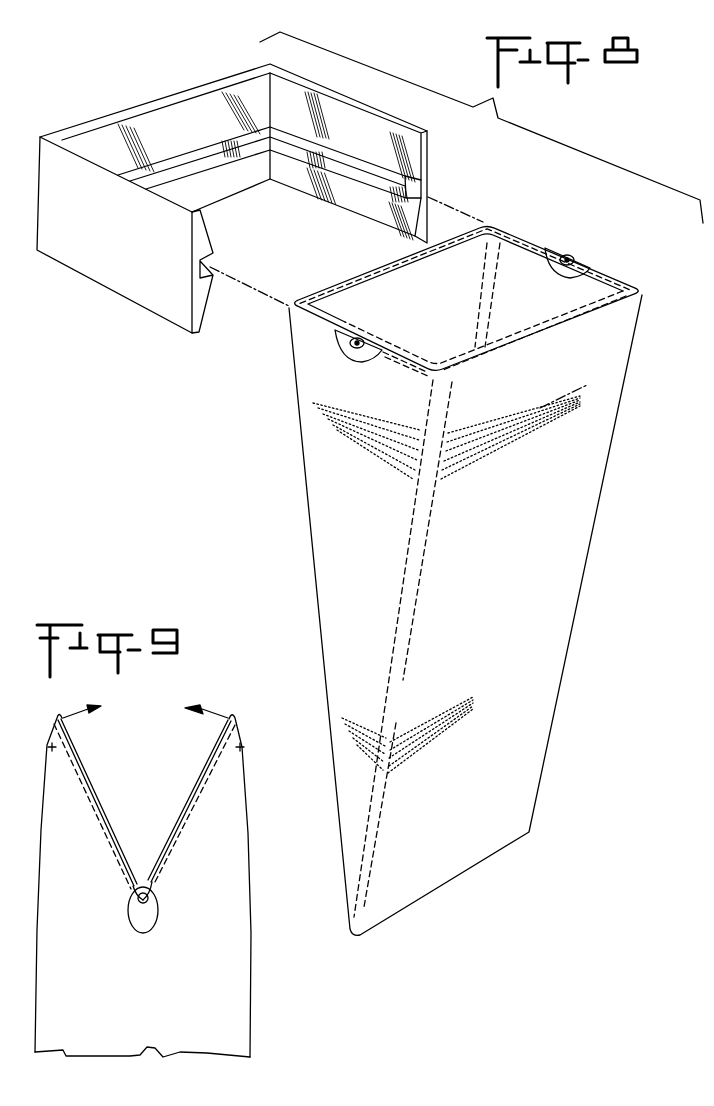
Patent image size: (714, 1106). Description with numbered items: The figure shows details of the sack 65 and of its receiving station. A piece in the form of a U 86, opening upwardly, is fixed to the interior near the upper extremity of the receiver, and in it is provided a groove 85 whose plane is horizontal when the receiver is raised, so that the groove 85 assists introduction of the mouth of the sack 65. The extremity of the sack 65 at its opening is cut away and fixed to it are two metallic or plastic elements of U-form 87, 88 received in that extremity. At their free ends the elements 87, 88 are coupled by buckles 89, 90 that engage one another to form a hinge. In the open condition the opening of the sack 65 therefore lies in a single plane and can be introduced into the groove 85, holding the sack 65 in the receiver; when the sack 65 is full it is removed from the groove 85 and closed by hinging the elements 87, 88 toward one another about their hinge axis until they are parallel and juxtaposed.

In FIG. 8, the sack 65 is at (583, 542).
In FIG. 9, the sack 65 is at (237, 987).
In FIG. 8, the groove 85 is at (320, 165).
In FIG. 8, the U-form piece 86 is at (128, 283).
In FIG. 8, the U-form element 87 is at (450, 243).
In FIG. 9, the U-form element 87 is at (100, 807).
In FIG. 8, the U-form element 88 is at (573, 322).
In FIG. 9, the U-form element 88 is at (181, 830).
In FIG. 8, the buckle 89 is at (353, 337).
In FIG. 9, the buckle 89 is at (128, 895).
In FIG. 8, the buckle 90 is at (370, 345).
In FIG. 9, the buckle 90 is at (153, 905).